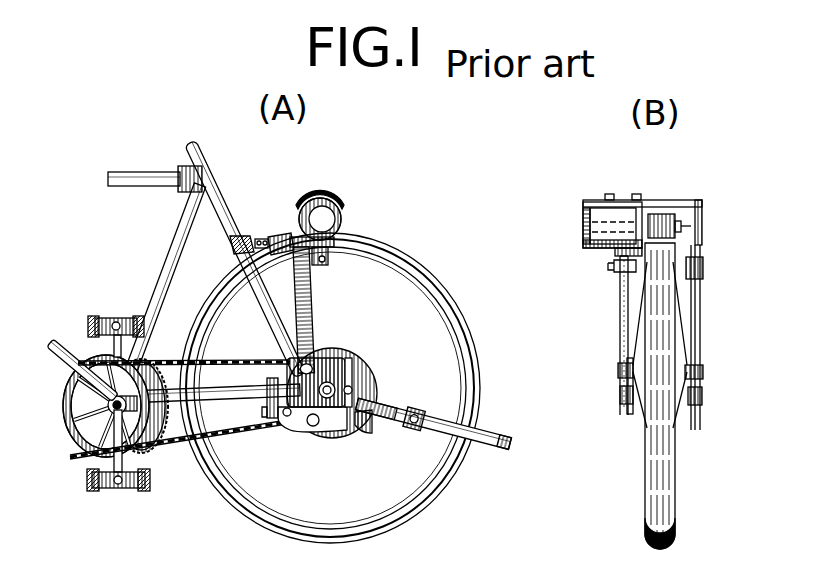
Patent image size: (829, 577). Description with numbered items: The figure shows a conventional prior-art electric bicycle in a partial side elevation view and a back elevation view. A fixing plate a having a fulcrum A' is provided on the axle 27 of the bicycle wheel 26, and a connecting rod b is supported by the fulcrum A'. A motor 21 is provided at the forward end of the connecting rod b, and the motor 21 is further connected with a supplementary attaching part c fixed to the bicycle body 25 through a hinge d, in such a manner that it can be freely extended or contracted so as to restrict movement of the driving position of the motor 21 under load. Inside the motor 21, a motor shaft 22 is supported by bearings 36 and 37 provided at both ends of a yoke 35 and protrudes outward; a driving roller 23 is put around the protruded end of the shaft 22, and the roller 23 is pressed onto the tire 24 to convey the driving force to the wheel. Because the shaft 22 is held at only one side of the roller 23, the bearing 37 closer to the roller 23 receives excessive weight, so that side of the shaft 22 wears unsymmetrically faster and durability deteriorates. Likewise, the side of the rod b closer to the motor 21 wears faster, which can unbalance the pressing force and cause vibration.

The motor 21 is at (314, 201).
The motor shaft 22 is at (648, 210).
The driving roller 23 is at (338, 228).
The tire 24 is at (415, 268).
The bicycle body 25 is at (161, 174).
The bicycle wheel 26 is at (449, 312).
The axle 27 is at (357, 387).
The yoke 35 is at (602, 212).
The bearing 36 is at (590, 222).
The bearing 37 is at (637, 198).
The fixing plate a is at (295, 418).
The connecting rod b is at (311, 301).
The supplementary attaching part c is at (243, 236).
The hinge d is at (266, 240).
The fulcrum A' is at (455, 377).